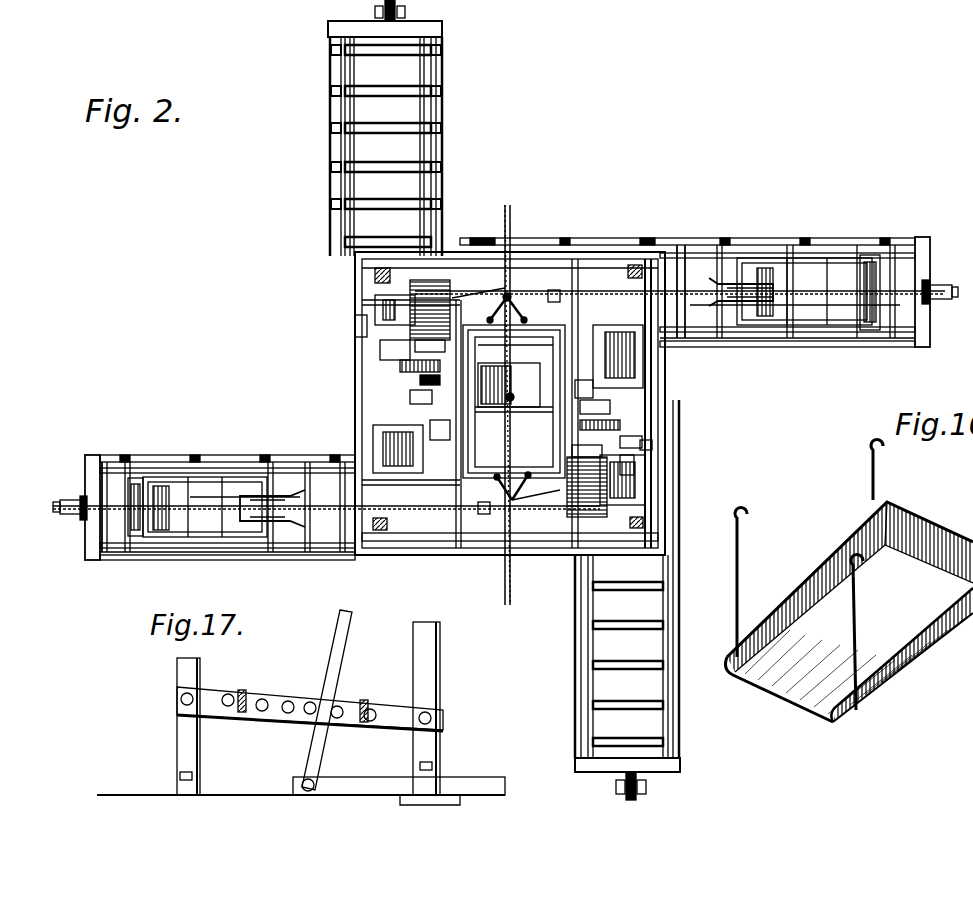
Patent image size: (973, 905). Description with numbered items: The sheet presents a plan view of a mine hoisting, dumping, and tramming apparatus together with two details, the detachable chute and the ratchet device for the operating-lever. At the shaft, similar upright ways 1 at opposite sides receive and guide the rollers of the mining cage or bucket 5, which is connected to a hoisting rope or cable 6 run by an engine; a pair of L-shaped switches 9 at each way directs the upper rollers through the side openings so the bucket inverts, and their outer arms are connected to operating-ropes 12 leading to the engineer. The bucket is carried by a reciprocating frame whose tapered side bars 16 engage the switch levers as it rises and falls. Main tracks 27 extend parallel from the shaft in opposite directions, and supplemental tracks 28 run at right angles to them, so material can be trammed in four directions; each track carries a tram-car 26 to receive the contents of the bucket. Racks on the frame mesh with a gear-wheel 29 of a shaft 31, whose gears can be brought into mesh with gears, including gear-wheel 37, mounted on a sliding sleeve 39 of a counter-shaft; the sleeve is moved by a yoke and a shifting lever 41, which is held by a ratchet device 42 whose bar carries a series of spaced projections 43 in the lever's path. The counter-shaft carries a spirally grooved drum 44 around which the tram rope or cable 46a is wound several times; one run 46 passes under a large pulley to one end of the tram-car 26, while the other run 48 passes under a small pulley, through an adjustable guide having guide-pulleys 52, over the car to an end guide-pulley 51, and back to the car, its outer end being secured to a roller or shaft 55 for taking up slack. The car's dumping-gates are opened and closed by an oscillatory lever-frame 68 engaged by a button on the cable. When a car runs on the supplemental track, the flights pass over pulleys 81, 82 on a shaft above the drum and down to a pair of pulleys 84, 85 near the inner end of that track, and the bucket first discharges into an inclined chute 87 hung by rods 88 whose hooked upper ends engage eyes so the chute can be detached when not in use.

In FIG. 2, the upright ways 1 is at (510, 403).
In FIG. 2, the mining cage or bucket 5 is at (515, 354).
In FIG. 2, the hoisting rope or cable 6 is at (512, 395).
In FIG. 2, the L-shaped switches 9 is at (504, 408).
In FIG. 2, the operating-ropes 12 is at (512, 226).
In FIG. 2, the side bars 16 is at (514, 402).
In FIG. 2, the motor 26 is at (507, 397).
In FIG. 2, the main tracks 27 is at (118, 572).
In FIG. 2, the supplemental tracks 28 is at (444, 140).
In FIG. 2, the gear-wheel 29 is at (513, 404).
In FIG. 2, the shaft 31 is at (403, 10).
In FIG. 2, the gear-wheel 37 is at (508, 397).
In FIG. 2, the sliding sleeve 39 is at (525, 420).
In FIG. 2, the shifting lever 41 is at (512, 398).
In FIG. 17, the shifting lever 41 is at (343, 645).
In FIG. 17, the ratchet device 42 is at (272, 722).
In FIG. 17, the projections 43 is at (310, 704).
In FIG. 2, the drum 44 is at (450, 280).
In FIG. 2, the run of tram rope 46 is at (478, 287).
In FIG. 2, the tram rope or cable 46a is at (555, 520).
In FIG. 2, the run of tram rope 48 is at (700, 306).
In FIG. 2, the end guide-pulley 51 is at (953, 288).
In FIG. 2, the guide-pulleys 52 is at (515, 401).
In FIG. 2, the roller or shaft 55 is at (878, 258).
In FIG. 2, the oscillatory lever-frame 68 is at (730, 282).
In FIG. 2, the pulley 81 is at (380, 352).
In FIG. 2, the pulley 82 is at (688, 440).
In FIG. 2, the pulley 84 is at (640, 565).
In FIG. 2, the pulley 85 is at (378, 300).
In FIG. 16, the inclined chute 87 is at (818, 562).
In FIG. 16, the hangers or rods 88 is at (876, 480).